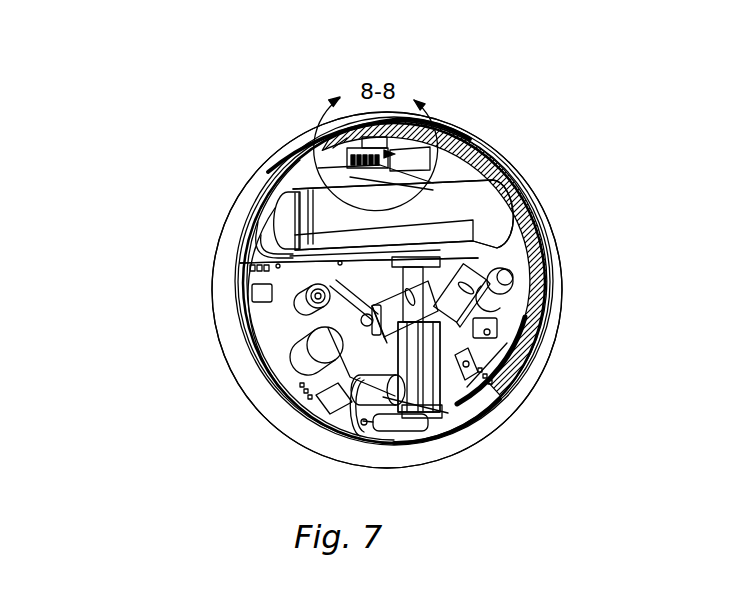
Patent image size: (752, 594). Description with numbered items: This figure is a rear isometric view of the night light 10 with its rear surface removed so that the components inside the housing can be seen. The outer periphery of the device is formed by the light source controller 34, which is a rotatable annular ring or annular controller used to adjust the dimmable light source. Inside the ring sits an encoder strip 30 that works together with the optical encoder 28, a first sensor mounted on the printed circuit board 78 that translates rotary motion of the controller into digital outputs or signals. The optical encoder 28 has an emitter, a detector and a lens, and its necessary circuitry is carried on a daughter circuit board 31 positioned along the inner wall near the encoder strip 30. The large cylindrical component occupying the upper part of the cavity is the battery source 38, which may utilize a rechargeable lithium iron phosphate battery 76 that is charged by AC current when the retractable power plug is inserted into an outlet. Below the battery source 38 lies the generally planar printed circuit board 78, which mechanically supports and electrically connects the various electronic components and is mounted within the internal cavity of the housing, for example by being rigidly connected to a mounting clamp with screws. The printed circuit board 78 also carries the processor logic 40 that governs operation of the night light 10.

The night light 10 is at (65, 118).
The optical encoder 28 is at (402, 160).
The encoder strip 30 is at (560, 296).
The daughter circuit board 31 is at (462, 132).
The light source controller 34 is at (204, 266).
The battery source 38 is at (503, 217).
The lithium iron phosphate battery 76 is at (503, 217).
The processor logic 40 is at (276, 352).
The printed circuit board 78 is at (276, 352).